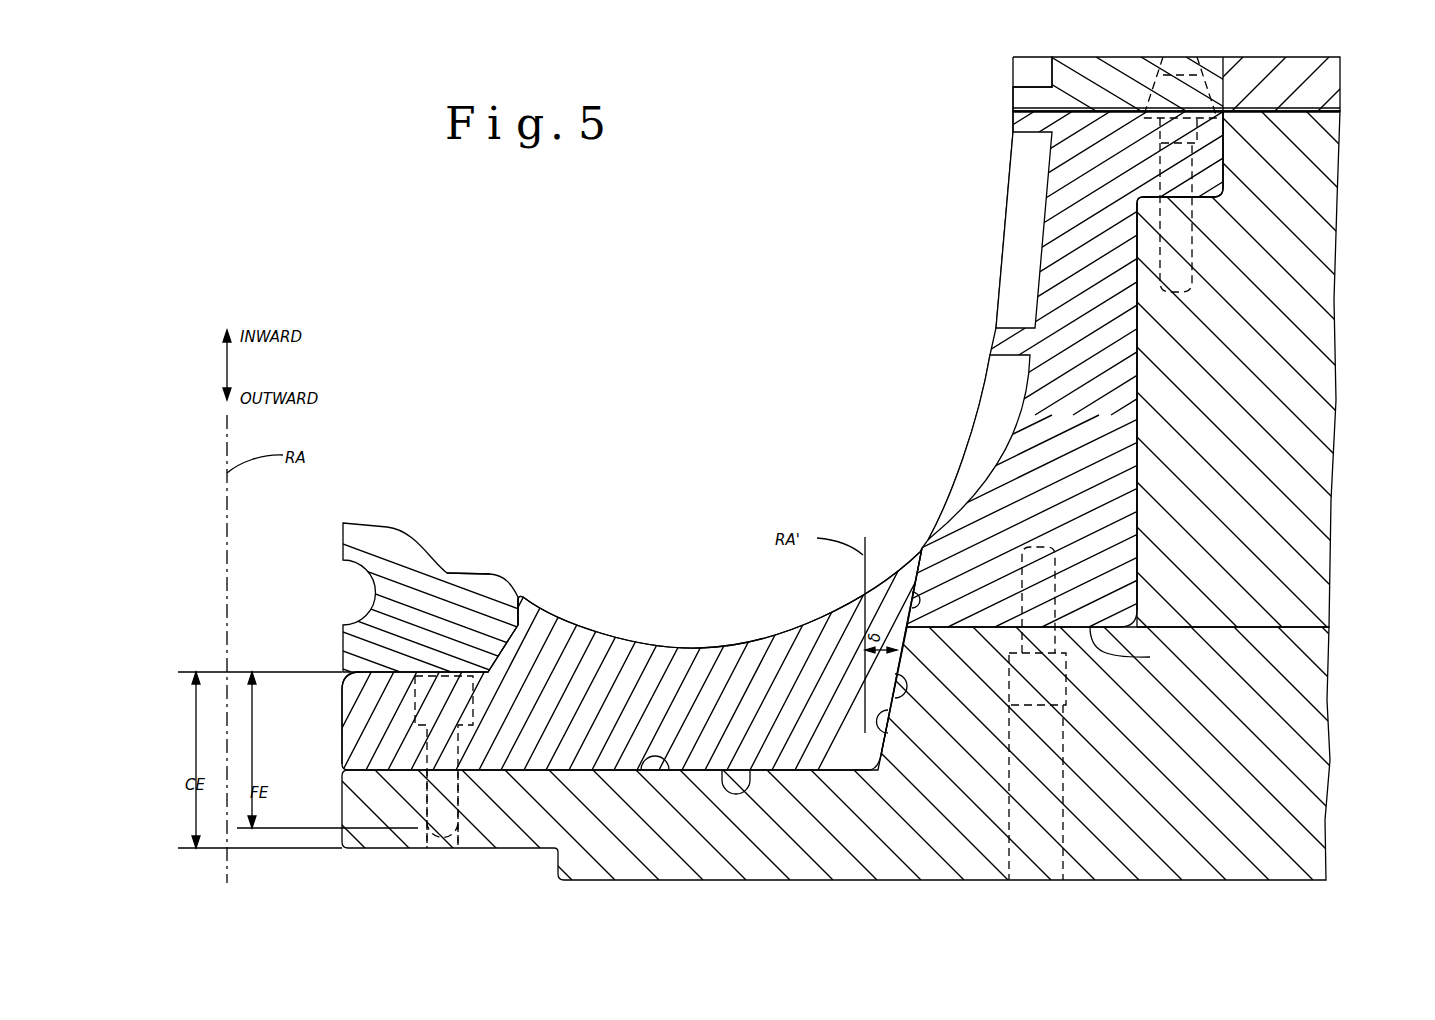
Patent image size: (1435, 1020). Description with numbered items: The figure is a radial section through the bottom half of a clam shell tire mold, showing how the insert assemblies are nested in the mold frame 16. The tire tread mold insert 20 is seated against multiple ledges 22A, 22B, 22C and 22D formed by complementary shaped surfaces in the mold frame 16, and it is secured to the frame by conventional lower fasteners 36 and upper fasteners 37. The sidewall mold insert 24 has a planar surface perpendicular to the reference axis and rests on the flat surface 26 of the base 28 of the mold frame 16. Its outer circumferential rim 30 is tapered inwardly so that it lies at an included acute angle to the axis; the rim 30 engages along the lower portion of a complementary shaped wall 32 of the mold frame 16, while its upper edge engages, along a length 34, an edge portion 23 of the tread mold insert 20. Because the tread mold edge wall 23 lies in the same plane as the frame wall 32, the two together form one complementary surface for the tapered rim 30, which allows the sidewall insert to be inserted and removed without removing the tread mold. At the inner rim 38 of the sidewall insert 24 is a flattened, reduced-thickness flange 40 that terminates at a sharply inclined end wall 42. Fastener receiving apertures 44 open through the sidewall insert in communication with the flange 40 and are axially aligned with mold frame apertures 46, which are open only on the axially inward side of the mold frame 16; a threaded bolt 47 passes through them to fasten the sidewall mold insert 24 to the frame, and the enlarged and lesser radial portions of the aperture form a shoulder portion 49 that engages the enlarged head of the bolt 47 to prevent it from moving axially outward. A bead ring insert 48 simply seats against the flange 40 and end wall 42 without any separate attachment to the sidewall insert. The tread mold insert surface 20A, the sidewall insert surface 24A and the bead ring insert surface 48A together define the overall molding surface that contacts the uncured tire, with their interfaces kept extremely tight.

The mold frame 16 is at (833, 848).
The tire tread mold insert 20 is at (1003, 375).
The tread mold insert surface 20A is at (1000, 272).
The ledge 22A is at (1223, 168).
The ledge 22B is at (1202, 200).
The ledge 22C is at (1137, 322).
The ledge 22D is at (1150, 657).
The edge portion of the tread mold insert 23 is at (900, 600).
The sidewall mold insert 24 is at (657, 667).
The sidewall insert surface 24A is at (603, 630).
The flat surface 26 is at (736, 772).
The base 28 is at (660, 760).
The outer circumferential rim 30 is at (895, 692).
The wall of the mold frame 32 is at (890, 710).
The upper portion of the rim 34 is at (912, 606).
The lower fasteners 36 is at (1043, 675).
The upper fasteners 37 is at (1183, 128).
The inner rim 38 is at (352, 684).
The flange 40 is at (352, 693).
The end wall 42 is at (520, 592).
The fastener receiving apertures 44 is at (427, 747).
The mold frame apertures 46 is at (458, 840).
The bolt 47 is at (438, 703).
The bead ring insert 48 is at (427, 580).
The bead ring insert surface 48A is at (490, 576).
The shoulder portion 49 is at (462, 728).